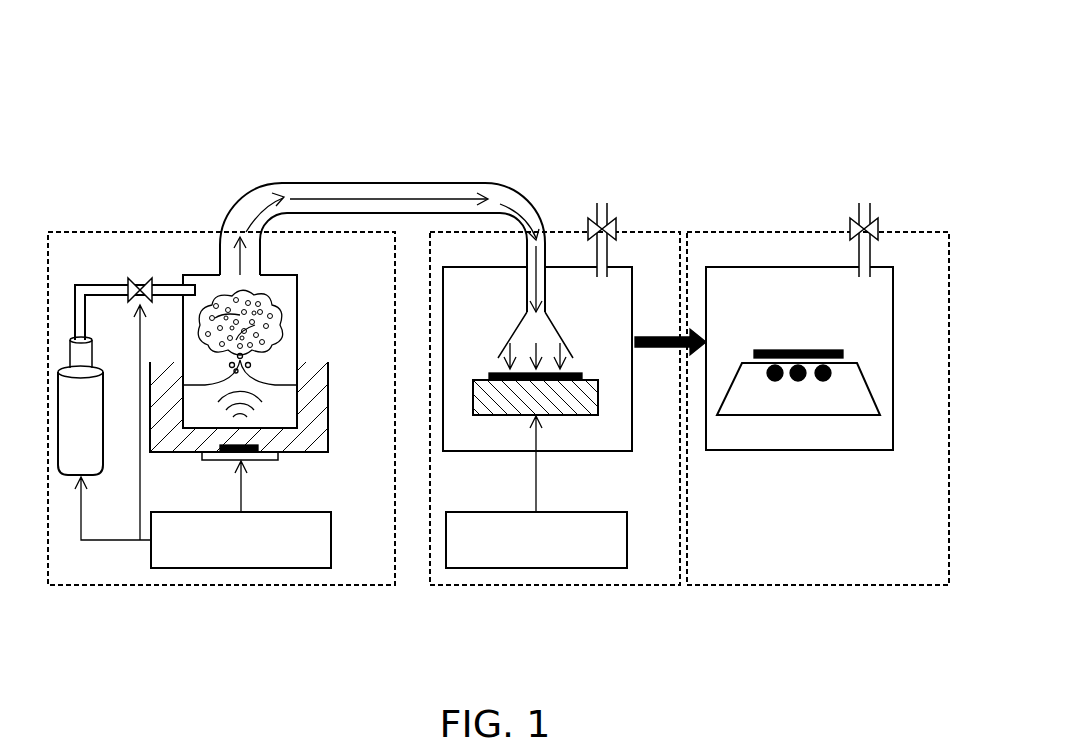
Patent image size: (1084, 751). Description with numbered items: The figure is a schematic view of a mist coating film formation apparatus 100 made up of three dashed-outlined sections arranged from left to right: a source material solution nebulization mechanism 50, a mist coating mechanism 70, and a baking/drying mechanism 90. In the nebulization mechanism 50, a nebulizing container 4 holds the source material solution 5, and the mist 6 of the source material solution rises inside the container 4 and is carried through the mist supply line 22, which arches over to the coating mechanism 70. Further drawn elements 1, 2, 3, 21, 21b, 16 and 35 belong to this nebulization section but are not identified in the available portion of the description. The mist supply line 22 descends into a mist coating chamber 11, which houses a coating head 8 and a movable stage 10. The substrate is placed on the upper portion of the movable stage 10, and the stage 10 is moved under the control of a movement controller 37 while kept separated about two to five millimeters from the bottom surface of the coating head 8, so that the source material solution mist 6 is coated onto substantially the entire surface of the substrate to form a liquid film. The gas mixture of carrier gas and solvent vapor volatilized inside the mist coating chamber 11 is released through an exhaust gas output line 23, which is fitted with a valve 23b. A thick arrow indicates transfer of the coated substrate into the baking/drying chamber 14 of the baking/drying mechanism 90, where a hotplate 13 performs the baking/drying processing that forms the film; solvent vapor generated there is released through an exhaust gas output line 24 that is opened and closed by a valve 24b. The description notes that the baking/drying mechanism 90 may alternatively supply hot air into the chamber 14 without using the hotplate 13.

The mist coating film formation apparatus 100 is at (826, 105).
The source material solution nebulization mechanism 50 is at (187, 231).
The mist coating mechanism 70 is at (651, 231).
The baking/drying mechanism 90 is at (750, 231).
The mist supply line 22 is at (381, 182).
The nebulizing container 4 is at (299, 338).
The source material solution mist 6 is at (255, 318).
The source material solution 5 is at (262, 404).
The water tank 2 is at (330, 374).
The ultrasonic transducer 1 is at (262, 450).
The transducer holder 3 is at (318, 436).
The carrier gas pipe 21 is at (85, 284).
The carrier gas valve 21b is at (141, 278).
The carrier gas cylinder 16 is at (106, 372).
The mist controller 35 is at (332, 540).
The mist coating chamber 11 is at (634, 288).
The exhaust gas output line 23 is at (609, 252).
The valve 23b is at (590, 222).
The coating head 8 is at (563, 332).
The movable stage 10 is at (600, 394).
The movement controller 37 is at (628, 540).
The baking/drying chamber 14 is at (895, 289).
The exhaust gas output line 24 is at (872, 250).
The valve 24b is at (852, 222).
The hotplate 13 is at (872, 385).